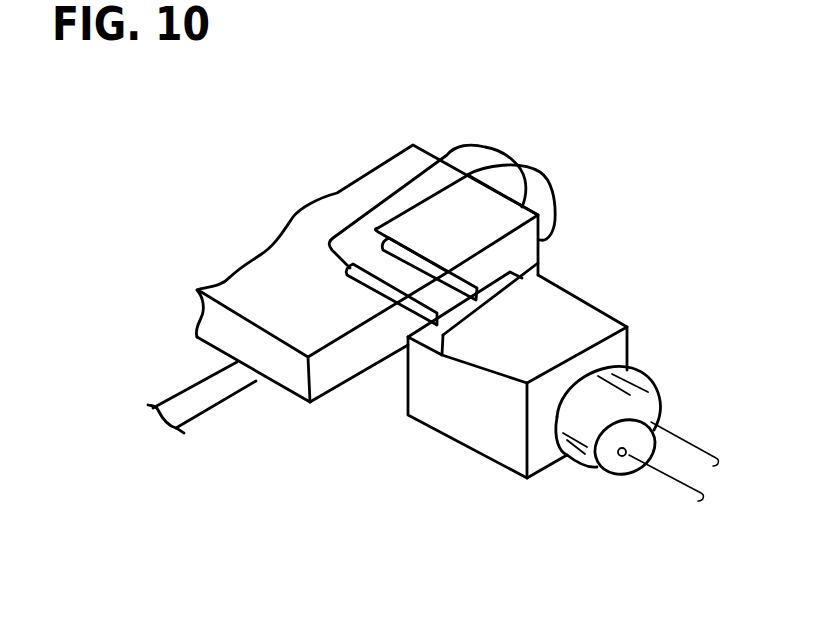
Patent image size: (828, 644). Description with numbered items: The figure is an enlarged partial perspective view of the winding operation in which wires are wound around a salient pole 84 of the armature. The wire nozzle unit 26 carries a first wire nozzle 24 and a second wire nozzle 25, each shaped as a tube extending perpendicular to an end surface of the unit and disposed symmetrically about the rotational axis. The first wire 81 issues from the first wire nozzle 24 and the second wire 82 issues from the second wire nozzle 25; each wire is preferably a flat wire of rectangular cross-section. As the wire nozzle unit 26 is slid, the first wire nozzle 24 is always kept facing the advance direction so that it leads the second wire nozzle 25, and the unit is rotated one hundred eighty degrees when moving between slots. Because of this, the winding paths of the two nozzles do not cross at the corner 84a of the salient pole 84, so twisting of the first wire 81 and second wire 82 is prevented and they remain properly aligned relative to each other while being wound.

The salient pole 84 is at (287, 382).
The corner of the salient pole 84a is at (420, 143).
The first wire 81 is at (478, 153).
The second wire 82 is at (550, 182).
The first wire nozzle 24 is at (397, 297).
The second wire nozzle 25 is at (430, 275).
The wire nozzle unit 26 is at (433, 488).